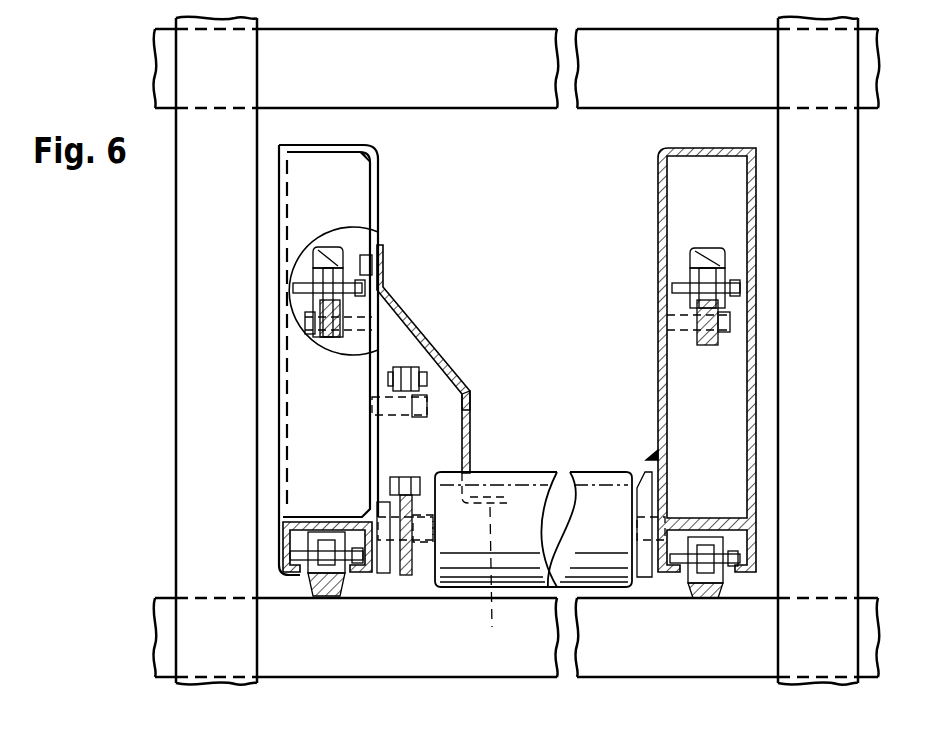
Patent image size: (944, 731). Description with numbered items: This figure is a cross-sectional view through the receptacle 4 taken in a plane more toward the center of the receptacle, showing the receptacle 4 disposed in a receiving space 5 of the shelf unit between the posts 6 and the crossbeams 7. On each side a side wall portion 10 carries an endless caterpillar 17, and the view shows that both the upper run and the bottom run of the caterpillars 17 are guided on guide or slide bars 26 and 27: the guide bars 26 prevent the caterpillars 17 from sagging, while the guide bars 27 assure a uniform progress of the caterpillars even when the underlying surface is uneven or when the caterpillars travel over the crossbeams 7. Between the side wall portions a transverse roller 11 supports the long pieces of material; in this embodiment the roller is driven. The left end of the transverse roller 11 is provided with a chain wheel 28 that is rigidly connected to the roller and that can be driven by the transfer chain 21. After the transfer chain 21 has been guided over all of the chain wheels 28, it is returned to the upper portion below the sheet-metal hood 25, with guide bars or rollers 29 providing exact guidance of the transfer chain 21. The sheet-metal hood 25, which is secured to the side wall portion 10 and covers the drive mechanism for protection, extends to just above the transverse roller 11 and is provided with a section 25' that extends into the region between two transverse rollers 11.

The receptacle 4 is at (657, 200).
The receiving space 5 is at (528, 247).
The posts 6 is at (185, 363).
The crossbeams 7 is at (660, 664).
The side wall portion 10 is at (383, 191).
The transverse roller 11 is at (535, 495).
The caterpillar 17 is at (318, 258).
The transfer chain 21 is at (410, 368).
The sheet-metal hood 25 is at (442, 374).
The section of the hood 25' is at (507, 584).
The guide bars 26 is at (325, 305).
The guide bars 27 is at (283, 537).
The chain wheel 28 is at (405, 576).
The guide bars or rollers 29 is at (471, 415).